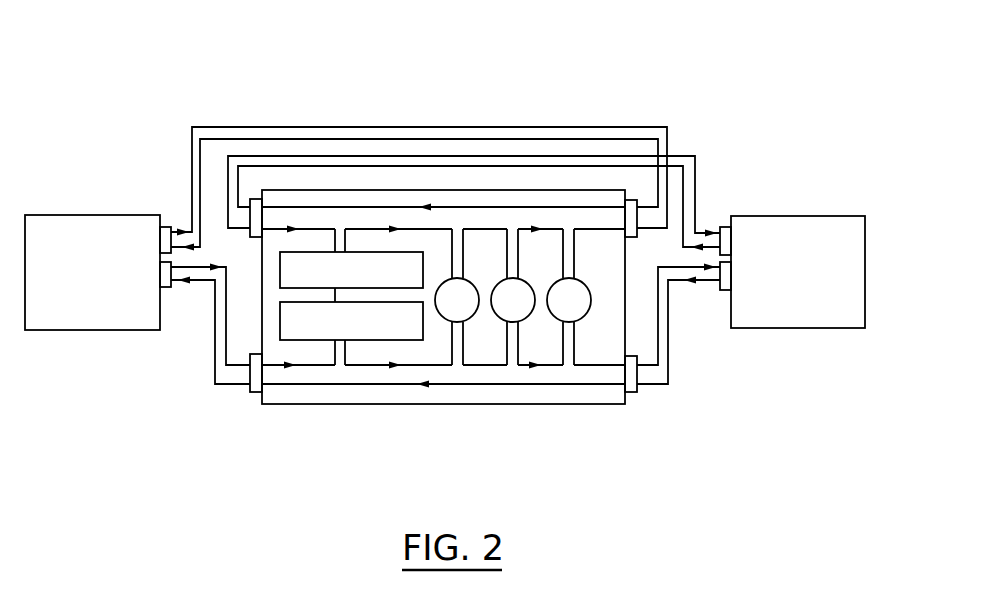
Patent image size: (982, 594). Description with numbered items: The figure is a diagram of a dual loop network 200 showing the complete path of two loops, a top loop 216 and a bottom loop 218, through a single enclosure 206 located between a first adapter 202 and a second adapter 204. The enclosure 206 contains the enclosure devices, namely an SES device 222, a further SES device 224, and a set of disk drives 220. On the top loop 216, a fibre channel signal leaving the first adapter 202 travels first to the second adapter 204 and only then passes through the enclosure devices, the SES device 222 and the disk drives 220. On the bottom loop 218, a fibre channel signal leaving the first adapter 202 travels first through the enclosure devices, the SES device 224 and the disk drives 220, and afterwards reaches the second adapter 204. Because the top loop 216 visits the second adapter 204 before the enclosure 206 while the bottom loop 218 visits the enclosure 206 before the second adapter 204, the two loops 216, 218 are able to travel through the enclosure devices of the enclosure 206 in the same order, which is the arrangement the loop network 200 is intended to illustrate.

The loop network 200 is at (148, 68).
The first adapter 202 is at (87, 214).
The second adapter 204 is at (833, 215).
The enclosure 206 is at (298, 404).
The top loop 216 is at (310, 127).
The bottom loop 218 is at (212, 370).
The disk drives 220 is at (468, 322).
The SES device 222 is at (279, 277).
The SES device 224 is at (370, 340).